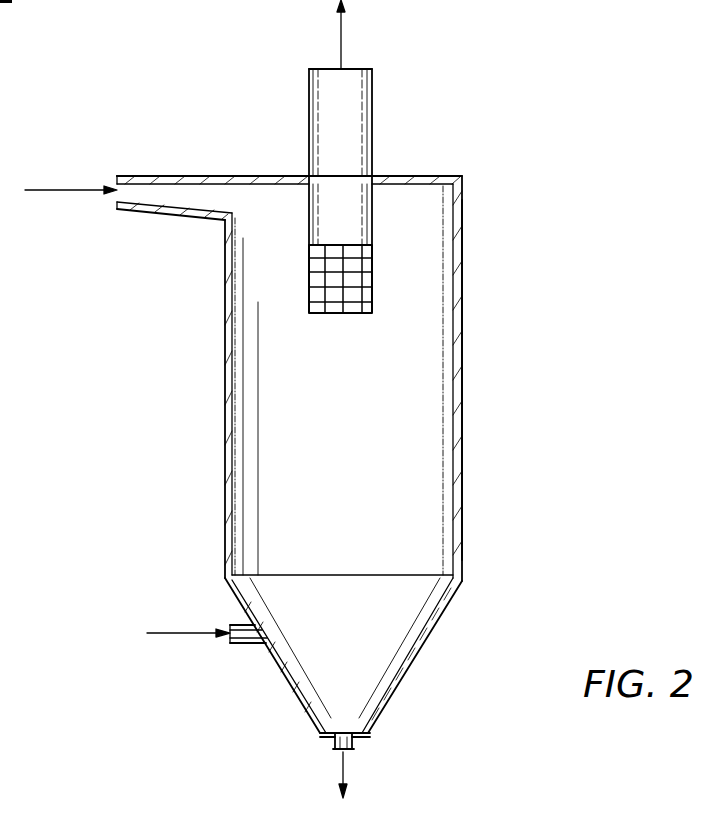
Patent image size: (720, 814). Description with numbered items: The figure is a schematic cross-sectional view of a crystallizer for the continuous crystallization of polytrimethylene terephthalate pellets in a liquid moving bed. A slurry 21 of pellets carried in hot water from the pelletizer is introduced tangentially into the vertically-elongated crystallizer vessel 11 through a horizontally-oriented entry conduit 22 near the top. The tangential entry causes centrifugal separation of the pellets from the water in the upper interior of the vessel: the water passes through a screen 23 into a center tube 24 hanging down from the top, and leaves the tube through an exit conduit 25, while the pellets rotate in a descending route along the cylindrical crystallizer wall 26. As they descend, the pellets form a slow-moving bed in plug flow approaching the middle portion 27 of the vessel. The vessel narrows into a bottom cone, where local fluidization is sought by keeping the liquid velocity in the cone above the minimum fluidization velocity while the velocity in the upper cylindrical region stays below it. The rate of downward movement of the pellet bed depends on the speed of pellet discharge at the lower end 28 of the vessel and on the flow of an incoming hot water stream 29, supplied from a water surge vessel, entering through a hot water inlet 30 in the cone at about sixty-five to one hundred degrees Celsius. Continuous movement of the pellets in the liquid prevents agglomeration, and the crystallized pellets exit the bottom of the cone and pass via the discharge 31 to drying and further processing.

The crystallizer vessel 11 is at (190, 389).
The slurry 21 is at (48, 190).
The entry conduit 22 is at (150, 174).
The screen 23 is at (362, 287).
The center tube 24 is at (372, 210).
The exit conduit 25 is at (372, 112).
The cylindrical crystallizer wall 26 is at (462, 347).
The middle portion 27 is at (423, 460).
The lower end 28 is at (365, 742).
The incoming hot water stream 29 is at (167, 631).
The hot water inlet 30 is at (245, 638).
The pellet discharge line 31 is at (340, 770).